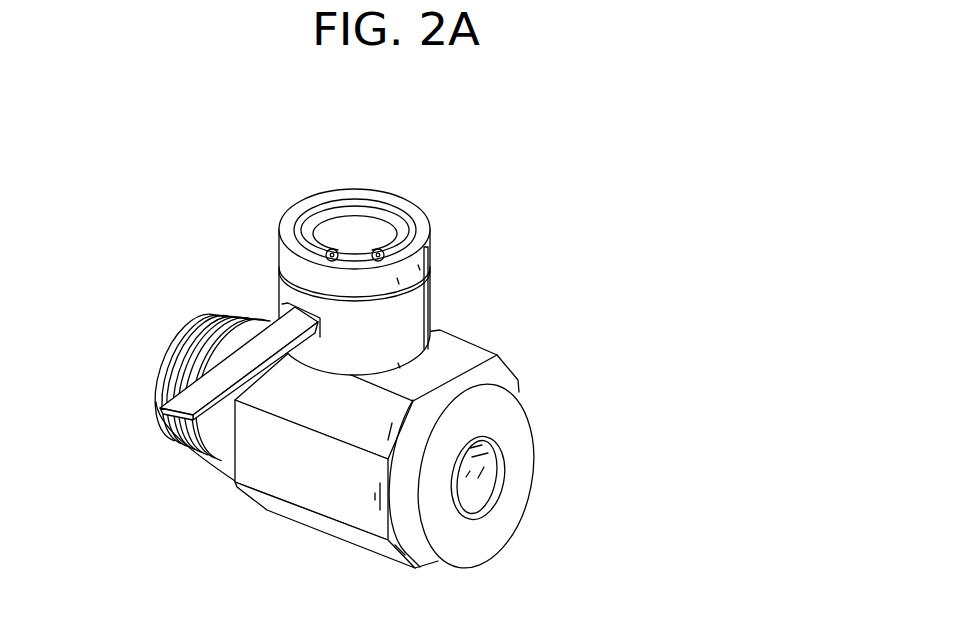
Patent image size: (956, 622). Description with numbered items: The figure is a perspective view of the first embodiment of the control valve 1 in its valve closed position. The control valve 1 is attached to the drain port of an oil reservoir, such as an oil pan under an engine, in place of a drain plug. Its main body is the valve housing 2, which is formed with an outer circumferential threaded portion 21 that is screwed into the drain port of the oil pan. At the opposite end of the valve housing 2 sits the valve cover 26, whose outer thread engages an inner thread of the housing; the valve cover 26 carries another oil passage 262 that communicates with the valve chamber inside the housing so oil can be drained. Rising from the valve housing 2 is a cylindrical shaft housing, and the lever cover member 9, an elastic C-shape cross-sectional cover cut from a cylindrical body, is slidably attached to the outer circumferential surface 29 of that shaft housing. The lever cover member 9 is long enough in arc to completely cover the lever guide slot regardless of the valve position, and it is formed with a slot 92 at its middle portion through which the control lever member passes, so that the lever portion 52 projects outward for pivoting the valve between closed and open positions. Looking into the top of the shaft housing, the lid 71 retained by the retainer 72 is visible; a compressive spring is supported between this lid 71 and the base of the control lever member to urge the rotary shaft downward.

The control valve 1 is at (557, 294).
The valve housing 2 is at (302, 548).
The lever cover member 9 is at (404, 320).
The outer circumferential threaded portion 21 is at (172, 330).
The valve cover 26 is at (523, 480).
The outer circumferential surface (lever cover attaching portion) 29 is at (436, 252).
The lever portion 52 is at (160, 420).
The lid 71 is at (367, 228).
The retainer 72 is at (340, 212).
The slot 92 is at (288, 305).
The oil passage 262 is at (477, 495).